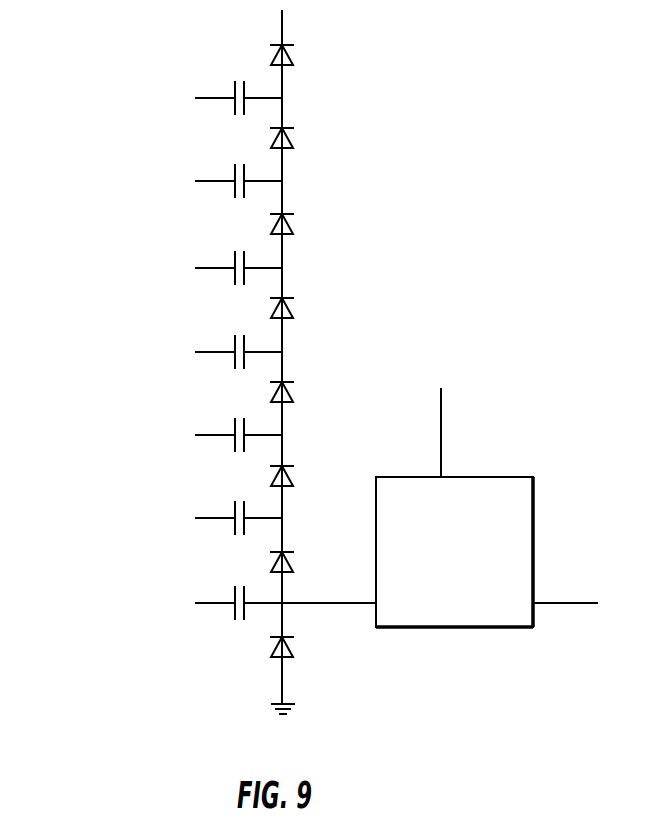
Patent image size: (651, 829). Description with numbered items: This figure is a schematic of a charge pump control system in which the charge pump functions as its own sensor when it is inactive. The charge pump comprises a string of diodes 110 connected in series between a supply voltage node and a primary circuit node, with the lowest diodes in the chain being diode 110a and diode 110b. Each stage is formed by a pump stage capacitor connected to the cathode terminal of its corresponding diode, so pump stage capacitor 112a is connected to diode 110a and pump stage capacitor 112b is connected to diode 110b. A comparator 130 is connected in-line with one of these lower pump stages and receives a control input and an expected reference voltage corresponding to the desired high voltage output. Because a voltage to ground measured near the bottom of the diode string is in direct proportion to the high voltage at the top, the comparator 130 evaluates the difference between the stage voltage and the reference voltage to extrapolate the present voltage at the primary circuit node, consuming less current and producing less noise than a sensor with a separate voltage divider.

The diodes 110 is at (55, 378).
The pump stage capacitor 112a is at (233, 612).
The pump stage capacitor 112b is at (235, 527).
The diode 110a is at (265, 647).
The diode 110b is at (274, 559).
The comparator 130 is at (533, 525).